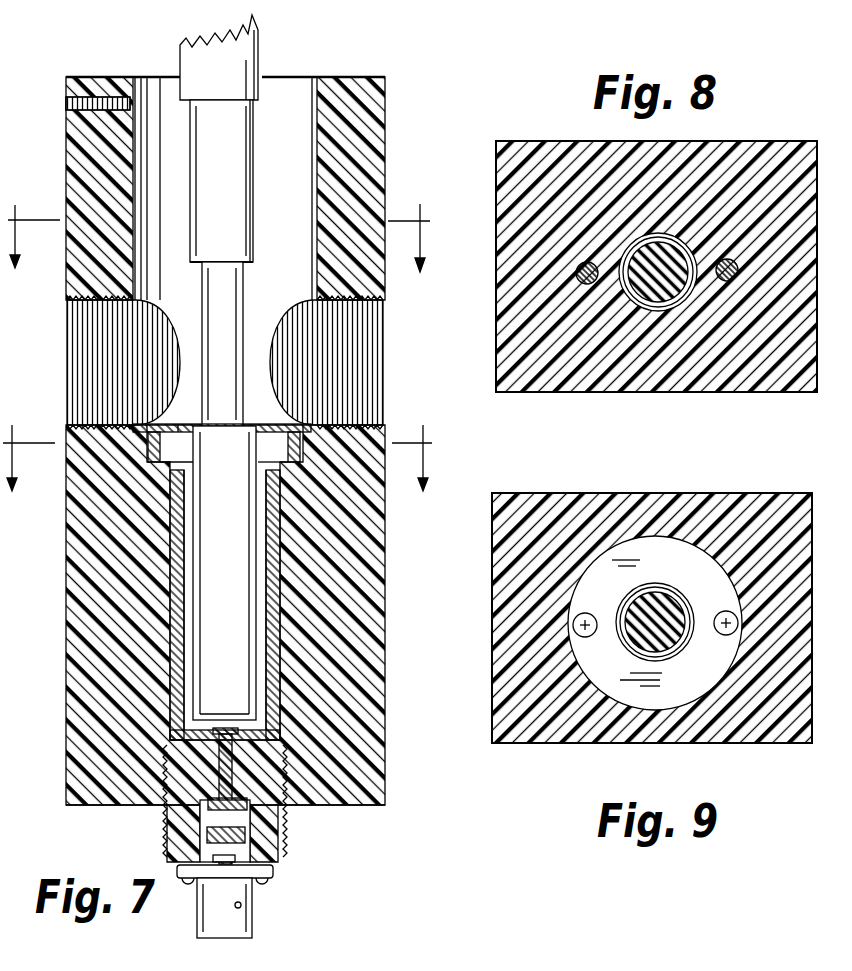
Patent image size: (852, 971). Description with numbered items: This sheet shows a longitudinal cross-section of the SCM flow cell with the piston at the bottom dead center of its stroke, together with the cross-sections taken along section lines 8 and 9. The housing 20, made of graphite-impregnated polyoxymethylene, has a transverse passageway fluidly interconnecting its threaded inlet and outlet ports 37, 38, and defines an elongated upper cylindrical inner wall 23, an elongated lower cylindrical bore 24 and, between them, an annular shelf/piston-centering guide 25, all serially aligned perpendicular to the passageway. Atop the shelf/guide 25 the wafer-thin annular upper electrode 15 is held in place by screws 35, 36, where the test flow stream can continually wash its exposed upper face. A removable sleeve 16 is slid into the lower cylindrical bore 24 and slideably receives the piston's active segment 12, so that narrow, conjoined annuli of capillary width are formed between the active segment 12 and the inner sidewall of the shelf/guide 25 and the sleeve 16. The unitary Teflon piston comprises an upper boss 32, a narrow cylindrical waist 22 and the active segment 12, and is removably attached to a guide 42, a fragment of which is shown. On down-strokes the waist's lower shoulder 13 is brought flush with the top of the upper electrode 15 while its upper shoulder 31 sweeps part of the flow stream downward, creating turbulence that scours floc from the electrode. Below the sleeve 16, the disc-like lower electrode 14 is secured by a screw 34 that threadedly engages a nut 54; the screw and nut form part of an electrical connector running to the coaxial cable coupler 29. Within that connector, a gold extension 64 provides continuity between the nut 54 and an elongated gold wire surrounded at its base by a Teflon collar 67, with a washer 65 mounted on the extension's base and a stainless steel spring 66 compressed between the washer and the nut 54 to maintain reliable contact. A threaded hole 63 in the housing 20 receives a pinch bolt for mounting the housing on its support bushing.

In FIG. 7, the cross-section 8- 8 is at (217, 443).
In FIG. 7, the cross-section 9- 9 is at (218, 224).
In FIG. 7, the active segment 12 is at (235, 494).
In FIG. 8, the active segment 12 is at (680, 290).
In FIG. 7, the lower shoulder 13 is at (256, 424).
In FIG. 7, the lower electrode 14 is at (275, 760).
In FIG. 7, the upper electrode 15 is at (178, 424).
In FIG. 9, the upper electrode 15 is at (710, 583).
In FIG. 7, the sleeve 16 is at (175, 600).
In FIG. 7, the housing 20 is at (90, 695).
In FIG. 8, the housing 20 is at (538, 150).
In FIG. 9, the housing 20 is at (728, 505).
In FIG. 7, the waist 22 is at (224, 318).
In FIG. 7, the upper cylindrical inner wall 23 is at (315, 135).
In FIG. 9, the upper cylindrical inner wall 23 is at (585, 568).
In FIG. 7, the lower cylindrical bore 24 is at (170, 560).
In FIG. 7, the shelf/piston-centering guide 25 is at (178, 462).
In FIG. 8, the shelf/piston-centering guide 25 is at (637, 245).
In FIG. 7, the coaxial cable coupler 29 is at (252, 906).
In FIG. 7, the upper shoulder 31 is at (250, 274).
In FIG. 7, the upper boss 32 is at (232, 170).
In FIG. 9, the upper boss 32 is at (660, 595).
In FIG. 7, the screw 34 is at (222, 728).
In FIG. 8, the screw 35 is at (733, 260).
In FIG. 9, the screw 35 is at (722, 636).
In FIG. 8, the screw 36 is at (578, 268).
In FIG. 9, the screw 36 is at (590, 637).
In FIG. 7, the threaded inlet port 37 is at (355, 345).
In FIG. 7, the threaded outlet port 38 is at (78, 352).
In FIG. 7, the guide 42 is at (190, 62).
In FIG. 7, the nut 54 is at (282, 800).
In FIG. 7, the hole 63 is at (66, 107).
In FIG. 7, the gold extension 64 is at (205, 815).
In FIG. 7, the washer 65 is at (205, 840).
In FIG. 7, the stainless steel spring 66 is at (248, 838).
In FIG. 7, the Teflon collar 67 is at (240, 872).